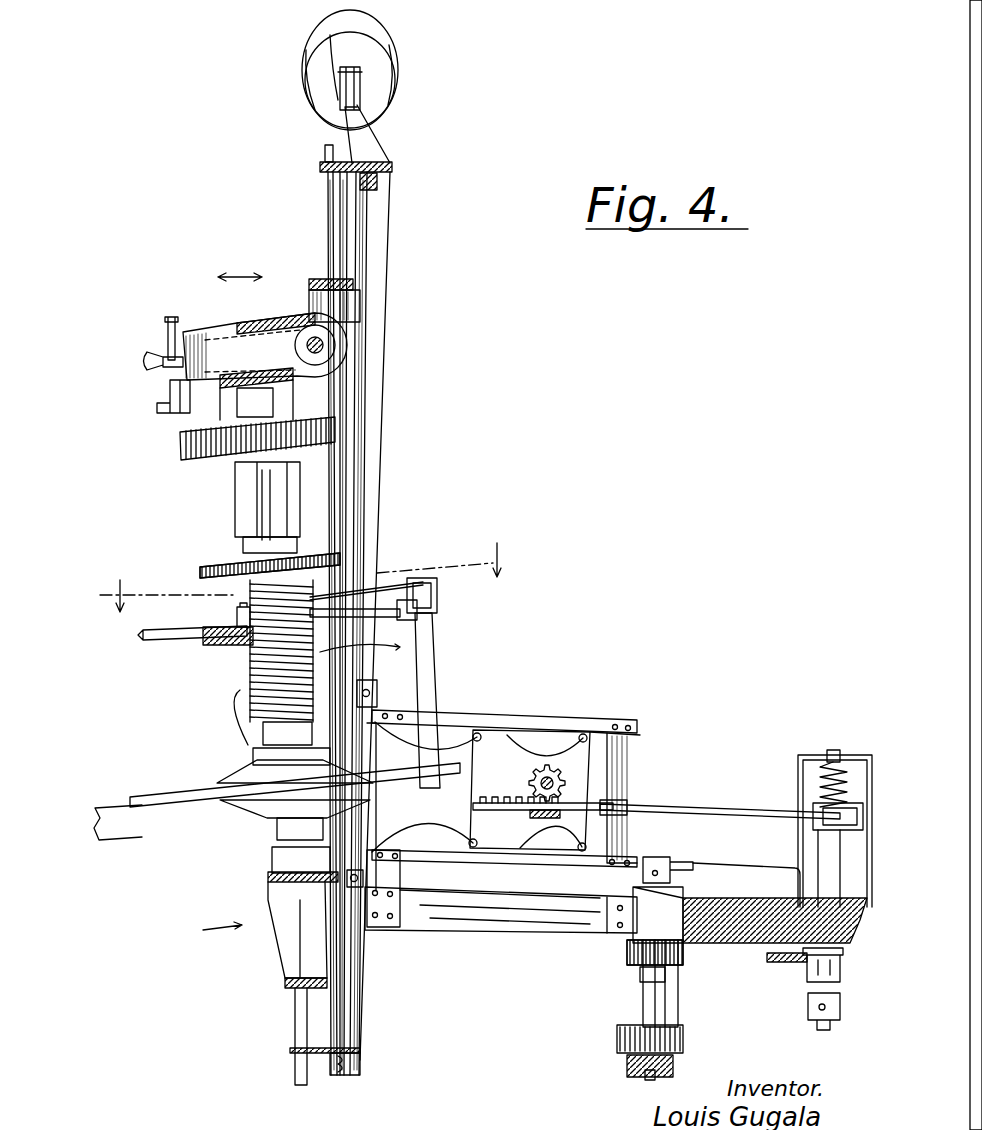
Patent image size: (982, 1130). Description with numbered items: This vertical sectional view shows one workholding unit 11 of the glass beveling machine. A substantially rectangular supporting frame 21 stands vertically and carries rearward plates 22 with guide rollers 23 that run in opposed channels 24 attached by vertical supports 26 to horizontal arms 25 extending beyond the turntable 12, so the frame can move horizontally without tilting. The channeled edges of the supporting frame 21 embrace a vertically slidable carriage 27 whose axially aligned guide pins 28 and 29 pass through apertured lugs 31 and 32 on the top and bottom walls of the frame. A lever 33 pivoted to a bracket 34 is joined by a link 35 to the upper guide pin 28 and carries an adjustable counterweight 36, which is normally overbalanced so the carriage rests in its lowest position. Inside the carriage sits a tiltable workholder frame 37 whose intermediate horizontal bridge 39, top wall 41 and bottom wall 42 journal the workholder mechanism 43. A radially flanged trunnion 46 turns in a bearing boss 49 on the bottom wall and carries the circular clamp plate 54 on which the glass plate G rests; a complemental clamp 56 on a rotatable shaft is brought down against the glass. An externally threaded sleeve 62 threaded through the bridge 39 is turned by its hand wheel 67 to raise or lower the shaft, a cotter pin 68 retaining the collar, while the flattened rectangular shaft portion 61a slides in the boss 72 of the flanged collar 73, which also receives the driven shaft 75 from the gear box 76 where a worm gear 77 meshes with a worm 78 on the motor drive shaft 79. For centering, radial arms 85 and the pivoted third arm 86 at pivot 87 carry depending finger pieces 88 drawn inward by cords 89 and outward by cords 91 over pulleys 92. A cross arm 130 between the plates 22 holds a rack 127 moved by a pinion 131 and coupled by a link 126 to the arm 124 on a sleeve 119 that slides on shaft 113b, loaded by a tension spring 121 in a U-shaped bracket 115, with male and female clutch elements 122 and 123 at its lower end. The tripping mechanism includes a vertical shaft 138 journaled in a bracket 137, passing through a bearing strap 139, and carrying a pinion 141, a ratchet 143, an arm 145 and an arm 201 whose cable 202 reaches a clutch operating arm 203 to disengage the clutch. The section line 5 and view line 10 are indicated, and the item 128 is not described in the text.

The counterweight 36 is at (399, 57).
The lever 33 is at (356, 72).
The bracket 34 is at (377, 148).
The link 35 is at (338, 126).
The apertured lug 31 is at (322, 166).
The guide pin 28 is at (331, 198).
The supporting frame 21 is at (378, 466).
The workholding unit 11 is at (398, 358).
The section line 5 is at (232, 603).
The gear box 76 is at (228, 330).
The worm gear 77 is at (300, 326).
The worm 78 is at (322, 340).
The drive shaft 79 is at (320, 344).
The top wall 41 is at (287, 386).
The circumferentially flanged collar 73 is at (330, 426).
The driven shaft 75 is at (240, 415).
The boss 72 is at (290, 482).
The rectangular shaft portion 61a is at (262, 511).
The cotter pin 68 is at (255, 541).
The hand wheel 67 is at (340, 556).
The externally threaded sleeve 62 is at (262, 682).
The workholder mechanism 43 is at (258, 745).
The complemental clamp 56 is at (258, 762).
The circular clamp plate 54 is at (223, 809).
The radially flanged trunnion 46 is at (280, 822).
The tiltable workholder frame 37 is at (275, 842).
The bottom wall 42 is at (280, 874).
The bearing boss 49 is at (262, 905).
The carriage 27 is at (279, 960).
The apertured lug 32 is at (291, 1052).
The guide pin 29 is at (300, 1086).
The glass plate G is at (136, 797).
The glass tube end 128 is at (114, 838).
The third arm 86 is at (160, 640).
The intermediate horizontal bridge 39 is at (237, 641).
The pivot mounting 87 is at (237, 614).
The radial arm 85 is at (420, 613).
The cord 91 is at (388, 578).
The pulley 92 is at (431, 580).
The finger piece 88 is at (433, 672).
The cord 89 is at (400, 649).
The section line 10 is at (311, 580).
The plate 22 is at (510, 722).
The bearing strap 139 is at (625, 880).
The horizontal arm 25 is at (462, 892).
The guide roller 23 is at (450, 722).
The channel 24 is at (540, 742).
The pinion 131 is at (598, 702).
The vertical support 26 is at (562, 778).
The cross arm 130 is at (486, 806).
The rack 127 is at (620, 805).
The link 126 is at (660, 805).
The U-shaped bracket 115 is at (800, 760).
The shaft 113b is at (833, 752).
The tension spring 121 is at (825, 781).
The arm 124 is at (816, 810).
The sleeve 119 is at (820, 850).
The arm 201 is at (672, 863).
The cable 202 is at (780, 872).
The turntable 12 is at (745, 935).
The vertical shaft 138 is at (650, 1010).
The ratchet 143 is at (640, 955).
The arm 145 is at (645, 975).
The pinion 141 is at (625, 1042).
The bracket 137 is at (640, 1072).
The clutch operating arm 203 is at (792, 960).
The male clutch element 122 is at (820, 975).
The female clutch element 123 is at (820, 1014).